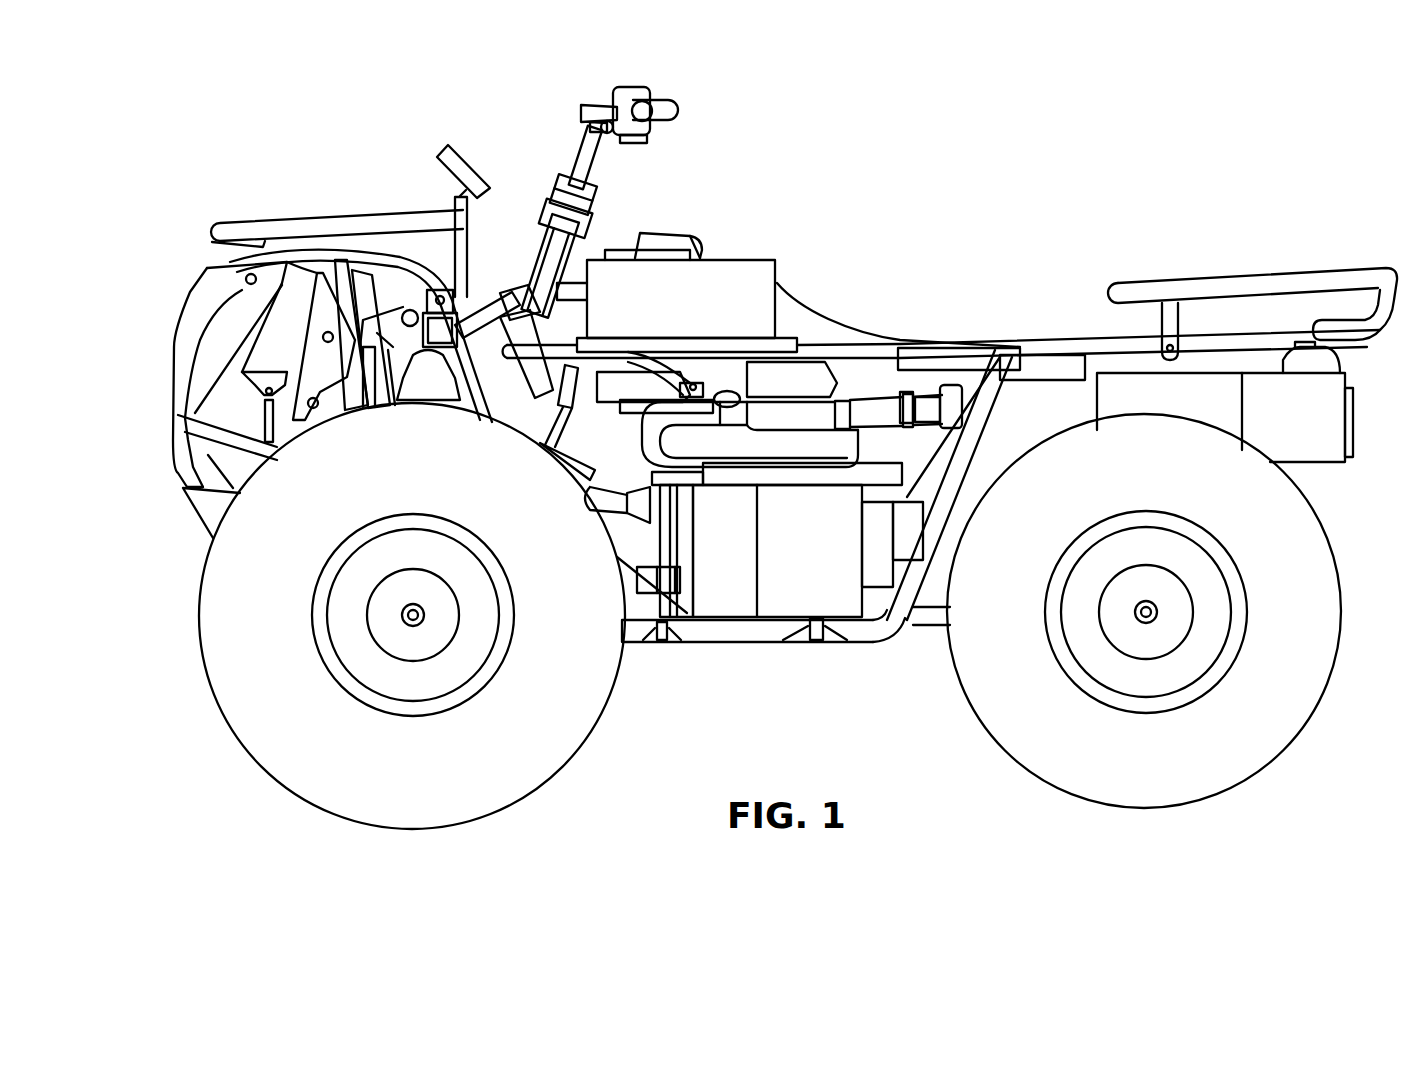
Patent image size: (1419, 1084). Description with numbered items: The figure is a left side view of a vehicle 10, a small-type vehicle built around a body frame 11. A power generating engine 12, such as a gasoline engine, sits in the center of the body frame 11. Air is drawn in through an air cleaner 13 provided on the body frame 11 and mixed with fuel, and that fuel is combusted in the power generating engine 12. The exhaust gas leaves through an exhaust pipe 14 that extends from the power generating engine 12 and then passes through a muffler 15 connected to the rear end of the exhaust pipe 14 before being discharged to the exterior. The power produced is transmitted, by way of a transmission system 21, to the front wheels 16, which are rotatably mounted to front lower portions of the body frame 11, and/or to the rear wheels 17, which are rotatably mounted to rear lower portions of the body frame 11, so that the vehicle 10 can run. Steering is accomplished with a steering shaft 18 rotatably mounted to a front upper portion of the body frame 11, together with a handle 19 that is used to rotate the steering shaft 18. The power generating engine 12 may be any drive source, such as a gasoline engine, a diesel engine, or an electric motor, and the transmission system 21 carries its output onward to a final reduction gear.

The vehicle 10 is at (950, 203).
The body frame 11 is at (738, 632).
The power generating engine 12 is at (800, 560).
The air cleaner 13 is at (673, 242).
The exhaust pipe 14 is at (783, 443).
The muffler 15 is at (1267, 387).
The front wheels 16 is at (227, 736).
The rear wheels 17 is at (1294, 739).
The steering shaft 18 is at (545, 245).
The handle 19 is at (660, 107).
The transmission system 21 is at (652, 578).